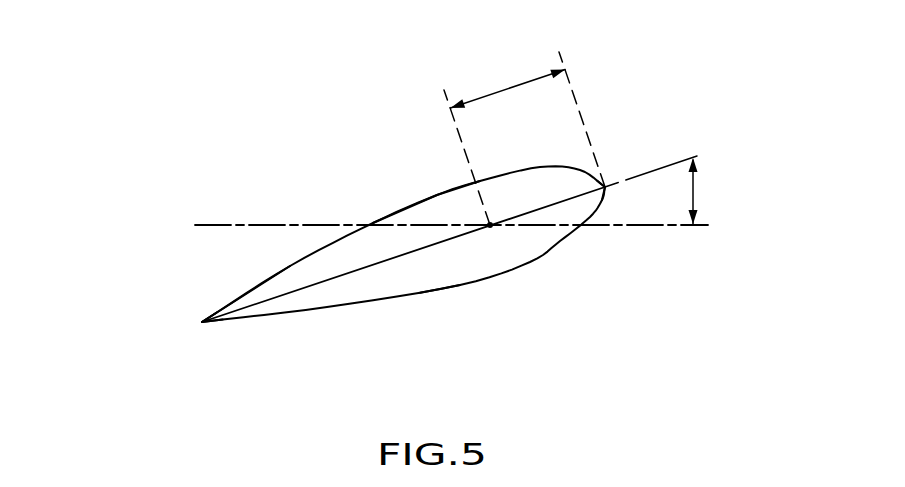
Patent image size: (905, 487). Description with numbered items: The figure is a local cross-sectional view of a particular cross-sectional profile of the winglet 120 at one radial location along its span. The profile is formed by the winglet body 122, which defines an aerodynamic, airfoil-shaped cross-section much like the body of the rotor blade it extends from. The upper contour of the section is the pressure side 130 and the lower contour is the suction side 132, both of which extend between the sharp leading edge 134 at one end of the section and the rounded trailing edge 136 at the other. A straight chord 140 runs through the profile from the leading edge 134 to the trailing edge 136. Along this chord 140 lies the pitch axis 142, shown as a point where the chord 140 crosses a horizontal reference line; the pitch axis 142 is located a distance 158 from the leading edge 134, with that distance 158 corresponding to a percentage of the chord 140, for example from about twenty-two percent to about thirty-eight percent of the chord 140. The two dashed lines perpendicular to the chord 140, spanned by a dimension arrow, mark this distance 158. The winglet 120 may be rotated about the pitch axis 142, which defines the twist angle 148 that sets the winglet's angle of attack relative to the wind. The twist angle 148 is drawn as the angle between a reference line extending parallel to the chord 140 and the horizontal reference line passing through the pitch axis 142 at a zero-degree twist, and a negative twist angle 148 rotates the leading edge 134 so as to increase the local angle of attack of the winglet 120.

The winglet 120 is at (240, 113).
The winglet body 122 is at (278, 266).
The pressure side 130 is at (437, 195).
The suction side 132 is at (443, 287).
The leading edge 134 is at (603, 187).
The trailing edge 136 is at (202, 322).
The chord 140 is at (320, 282).
The pitch axis 142 is at (490, 225).
The twist angle 148 is at (695, 193).
The distance 158 is at (508, 88).